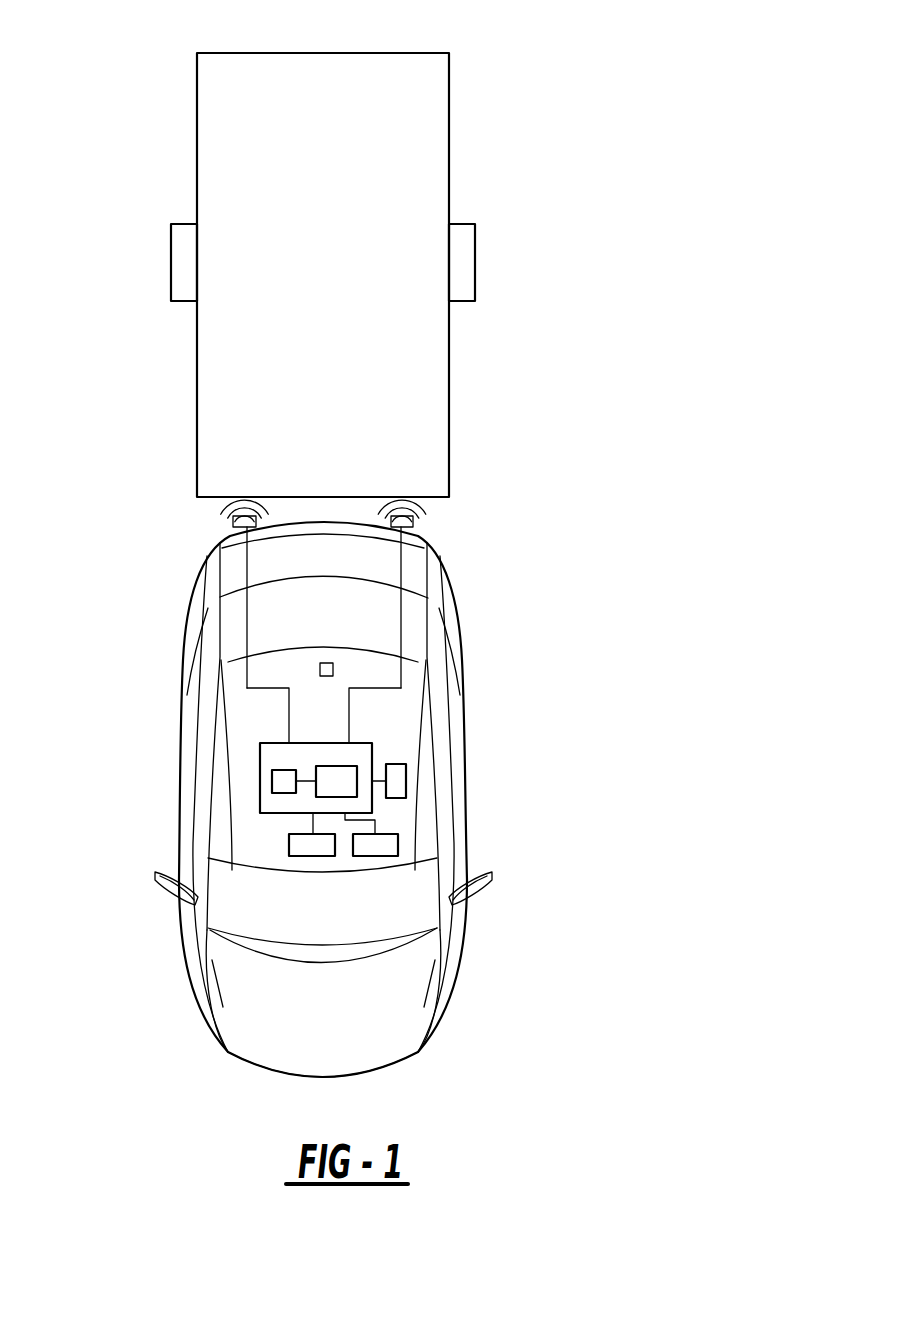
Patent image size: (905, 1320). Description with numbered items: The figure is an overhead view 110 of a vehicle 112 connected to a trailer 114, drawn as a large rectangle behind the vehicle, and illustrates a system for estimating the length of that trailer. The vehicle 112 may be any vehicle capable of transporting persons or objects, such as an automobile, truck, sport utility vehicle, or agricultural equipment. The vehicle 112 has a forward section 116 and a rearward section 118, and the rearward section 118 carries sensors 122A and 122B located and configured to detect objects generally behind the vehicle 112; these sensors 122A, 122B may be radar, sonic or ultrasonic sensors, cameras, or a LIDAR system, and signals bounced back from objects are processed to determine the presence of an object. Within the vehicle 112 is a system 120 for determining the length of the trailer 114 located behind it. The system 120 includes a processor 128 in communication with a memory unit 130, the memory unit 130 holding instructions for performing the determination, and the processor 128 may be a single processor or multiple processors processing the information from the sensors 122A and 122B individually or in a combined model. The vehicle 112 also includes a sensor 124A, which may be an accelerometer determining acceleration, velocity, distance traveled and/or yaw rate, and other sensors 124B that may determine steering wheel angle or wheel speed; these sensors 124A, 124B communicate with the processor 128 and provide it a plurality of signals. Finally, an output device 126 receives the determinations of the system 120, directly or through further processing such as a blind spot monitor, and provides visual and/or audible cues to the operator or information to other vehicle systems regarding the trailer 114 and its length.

The overhead view 110 is at (578, 230).
The vehicle 112 is at (452, 1024).
The trailer 114 is at (455, 126).
The forward section 116 is at (240, 1055).
The rearward section 118 is at (205, 560).
The system 120 is at (373, 742).
The sensor 122A is at (413, 525).
The sensor 122B is at (232, 525).
The sensor 124A is at (406, 781).
The sensors 124B is at (399, 845).
The output device 126 is at (289, 846).
The processor 128 is at (320, 766).
The memory unit 130 is at (271, 782).